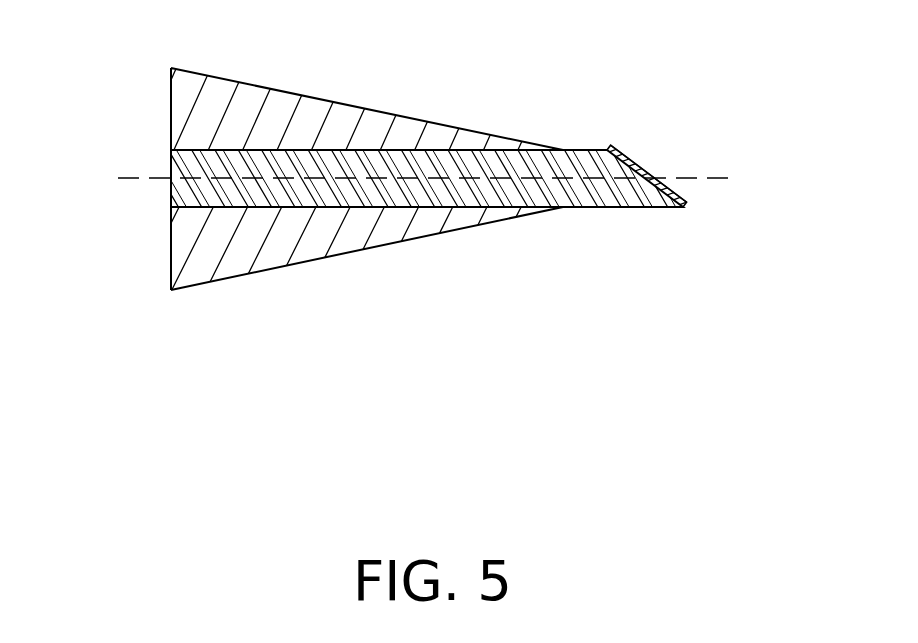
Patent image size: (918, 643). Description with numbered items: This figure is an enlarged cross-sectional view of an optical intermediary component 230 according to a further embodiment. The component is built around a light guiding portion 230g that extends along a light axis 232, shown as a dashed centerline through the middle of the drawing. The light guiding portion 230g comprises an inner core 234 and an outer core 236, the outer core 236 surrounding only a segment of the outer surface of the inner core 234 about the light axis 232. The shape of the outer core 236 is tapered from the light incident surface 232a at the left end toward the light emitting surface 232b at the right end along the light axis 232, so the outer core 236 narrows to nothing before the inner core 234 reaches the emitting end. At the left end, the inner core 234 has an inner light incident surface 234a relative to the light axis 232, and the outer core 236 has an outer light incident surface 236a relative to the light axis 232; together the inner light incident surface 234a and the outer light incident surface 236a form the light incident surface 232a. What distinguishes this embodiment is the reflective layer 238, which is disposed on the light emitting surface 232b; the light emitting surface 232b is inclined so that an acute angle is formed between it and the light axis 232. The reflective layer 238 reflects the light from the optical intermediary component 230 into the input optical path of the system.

The optical intermediary component 230 is at (435, 253).
The light guiding portion 230g is at (427, 243).
The light axis 232 is at (701, 172).
The light incident surface 232a is at (102, 244).
The light emitting surface 232b is at (684, 184).
The inner core 234 is at (600, 207).
The inner light incident surface 234a is at (171, 192).
The outer core 236 is at (465, 217).
The outer light incident surface 236a is at (171, 243).
The reflective layer 238 is at (667, 188).